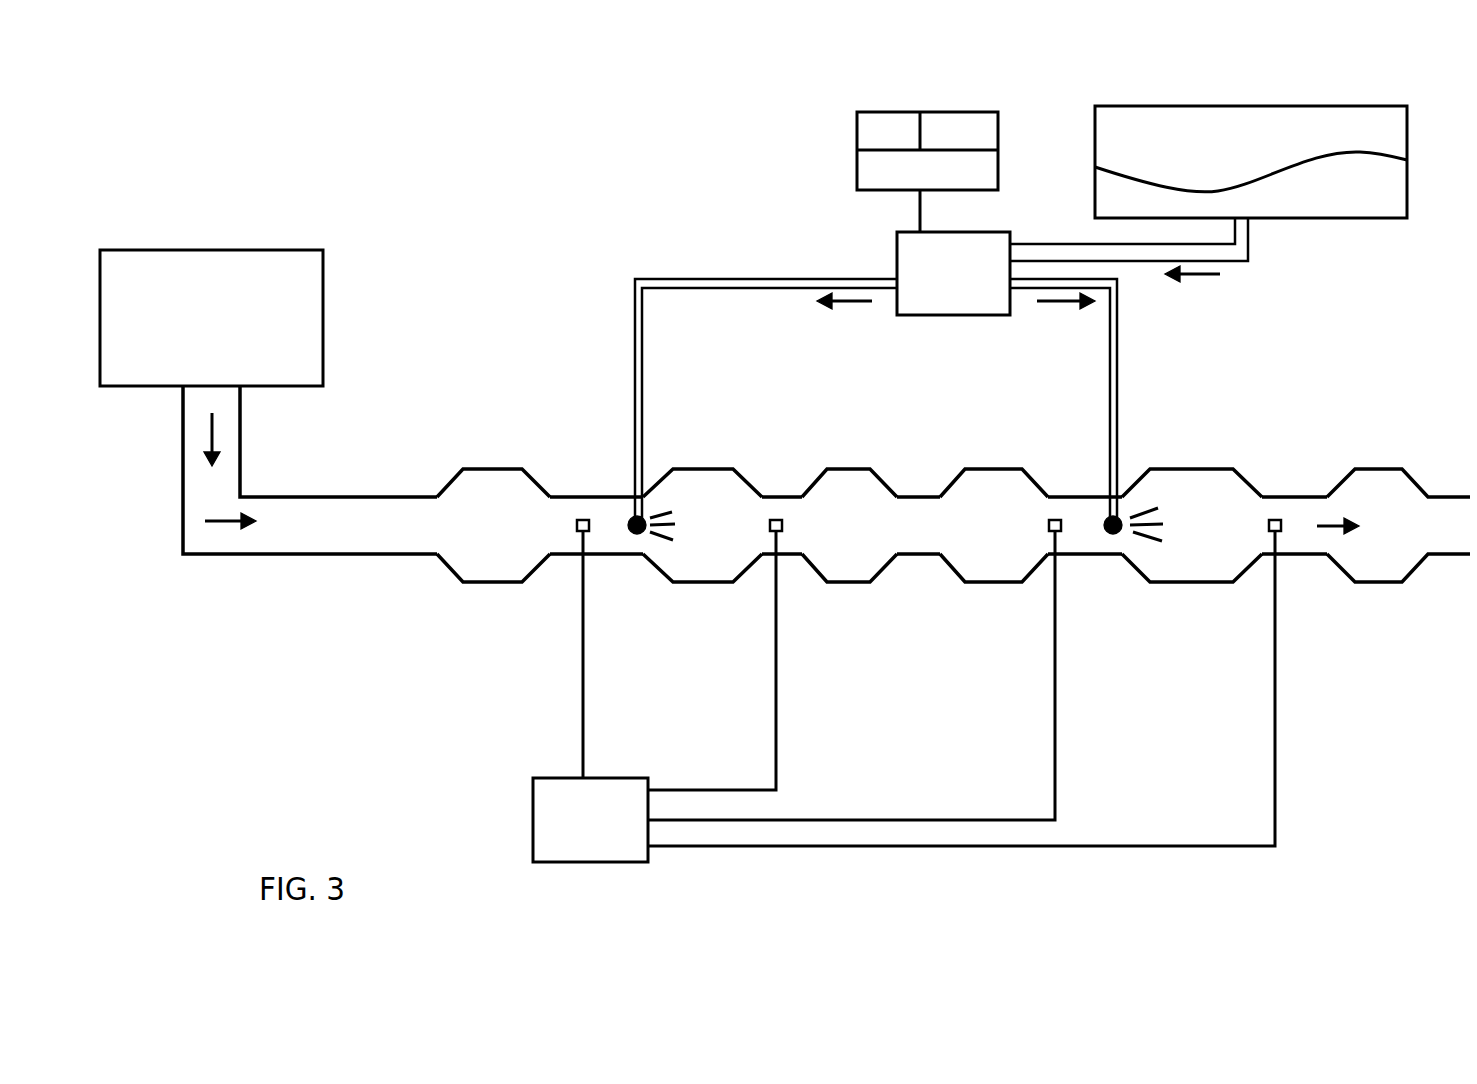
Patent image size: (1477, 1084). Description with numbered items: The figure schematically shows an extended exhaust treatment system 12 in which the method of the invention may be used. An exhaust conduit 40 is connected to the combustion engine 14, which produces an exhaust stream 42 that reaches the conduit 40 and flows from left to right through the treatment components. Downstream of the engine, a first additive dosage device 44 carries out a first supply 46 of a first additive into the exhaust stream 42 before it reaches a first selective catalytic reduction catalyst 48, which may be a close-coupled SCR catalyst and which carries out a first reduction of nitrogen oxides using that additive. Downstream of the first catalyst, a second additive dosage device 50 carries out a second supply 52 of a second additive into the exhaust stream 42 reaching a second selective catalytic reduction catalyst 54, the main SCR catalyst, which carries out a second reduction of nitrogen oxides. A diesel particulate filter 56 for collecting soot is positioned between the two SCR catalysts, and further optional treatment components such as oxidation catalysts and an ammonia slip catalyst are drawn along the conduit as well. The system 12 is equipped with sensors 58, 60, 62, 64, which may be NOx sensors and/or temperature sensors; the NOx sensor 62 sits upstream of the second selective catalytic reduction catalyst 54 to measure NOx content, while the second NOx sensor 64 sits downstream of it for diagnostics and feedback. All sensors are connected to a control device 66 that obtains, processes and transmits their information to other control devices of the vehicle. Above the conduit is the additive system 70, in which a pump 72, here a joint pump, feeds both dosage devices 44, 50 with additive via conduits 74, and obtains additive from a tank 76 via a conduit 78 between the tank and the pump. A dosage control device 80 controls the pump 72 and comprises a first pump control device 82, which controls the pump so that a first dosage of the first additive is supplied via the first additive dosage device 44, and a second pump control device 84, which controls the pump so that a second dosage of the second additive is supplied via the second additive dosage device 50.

The exhaust treatment system 12 is at (1322, 675).
The combustion engine 14 is at (211, 318).
The exhaust conduit 40 is at (183, 474).
The exhaust stream 42 is at (218, 530).
The first additive dosage device 44 is at (635, 533).
The first supply 46 is at (683, 518).
The first selective catalytic reduction catalyst 48 is at (702, 560).
The second additive dosage device 50 is at (1110, 533).
The second supply 52 is at (1167, 518).
The second selective catalytic reduction catalyst 54 is at (1197, 560).
The diesel particulate filter 56 is at (978, 568).
The sensor 58 is at (590, 518).
The sensor 60 is at (778, 518).
The NOx sensor 62 is at (1062, 518).
The second NOx sensor 64 is at (1282, 518).
The control device 66 is at (590, 820).
The additive system 70 is at (772, 167).
The pump 72 is at (953, 252).
The conduits for additive 74 is at (847, 307).
The tank for additive 76 is at (1251, 162).
The conduit between tank and pump 78 is at (1250, 250).
The dosage control device 80 is at (927, 151).
The first pump control device 82 is at (894, 131).
The second pump control device 84 is at (955, 133).